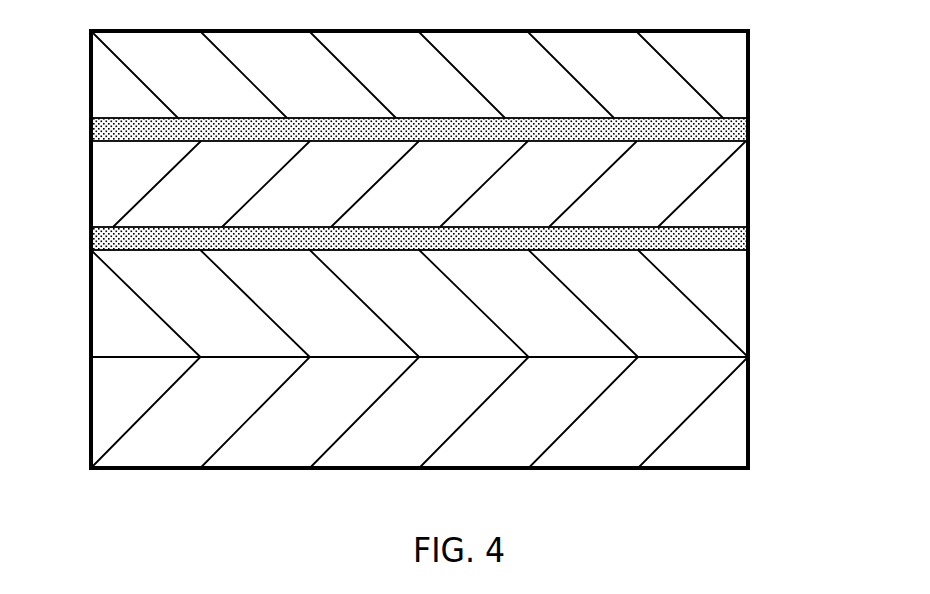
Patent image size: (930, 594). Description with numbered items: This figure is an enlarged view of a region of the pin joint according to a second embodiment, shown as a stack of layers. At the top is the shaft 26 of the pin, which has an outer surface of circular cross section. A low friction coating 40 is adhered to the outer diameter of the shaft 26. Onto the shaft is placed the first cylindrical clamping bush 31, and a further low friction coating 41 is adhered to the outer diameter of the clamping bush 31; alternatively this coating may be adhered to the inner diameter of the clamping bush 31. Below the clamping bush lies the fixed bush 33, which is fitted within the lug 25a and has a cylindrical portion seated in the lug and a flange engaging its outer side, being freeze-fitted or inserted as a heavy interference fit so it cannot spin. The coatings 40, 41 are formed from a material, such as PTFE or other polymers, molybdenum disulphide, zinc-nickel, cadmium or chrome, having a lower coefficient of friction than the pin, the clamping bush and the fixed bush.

The shaft 26 is at (117, 100).
The low friction coating 41 is at (735, 128).
The first clamping bush 31 is at (110, 195).
The low friction coating 40 is at (93, 237).
The fixed bush 33 is at (727, 303).
The lug 25a is at (730, 412).